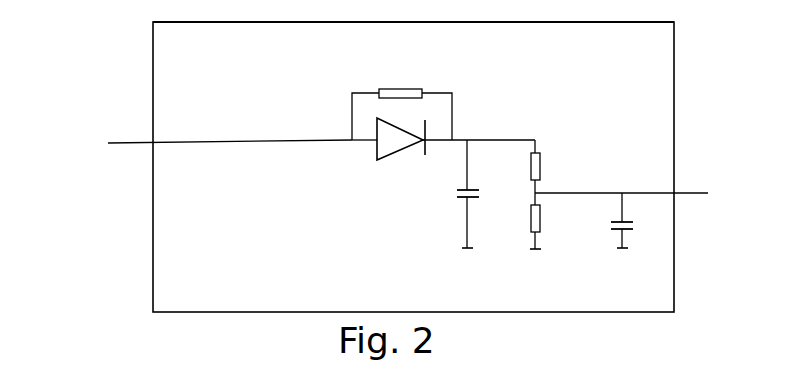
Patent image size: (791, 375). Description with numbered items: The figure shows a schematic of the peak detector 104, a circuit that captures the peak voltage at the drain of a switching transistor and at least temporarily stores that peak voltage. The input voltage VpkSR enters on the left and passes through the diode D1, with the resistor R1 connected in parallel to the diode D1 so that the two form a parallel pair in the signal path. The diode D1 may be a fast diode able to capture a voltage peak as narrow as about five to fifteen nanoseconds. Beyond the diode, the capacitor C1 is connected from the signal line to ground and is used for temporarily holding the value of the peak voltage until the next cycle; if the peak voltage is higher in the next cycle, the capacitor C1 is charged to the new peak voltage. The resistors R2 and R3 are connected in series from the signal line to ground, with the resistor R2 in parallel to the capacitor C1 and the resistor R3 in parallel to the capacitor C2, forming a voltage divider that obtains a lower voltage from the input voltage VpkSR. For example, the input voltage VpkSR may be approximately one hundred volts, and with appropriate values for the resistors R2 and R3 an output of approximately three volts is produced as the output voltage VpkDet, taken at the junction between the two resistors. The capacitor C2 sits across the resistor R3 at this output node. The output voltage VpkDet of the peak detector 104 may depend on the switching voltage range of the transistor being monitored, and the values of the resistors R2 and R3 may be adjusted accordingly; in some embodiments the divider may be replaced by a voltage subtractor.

The peak detector 104 is at (222, 293).
The resistor R1 is at (402, 102).
The diode D1 is at (443, 157).
The capacitor C1 is at (457, 194).
The resistor R2 is at (549, 166).
The resistor R3 is at (549, 221).
The capacitor C2 is at (634, 224).
The input voltage VpkSR is at (192, 141).
The output voltage VpkDet is at (651, 195).